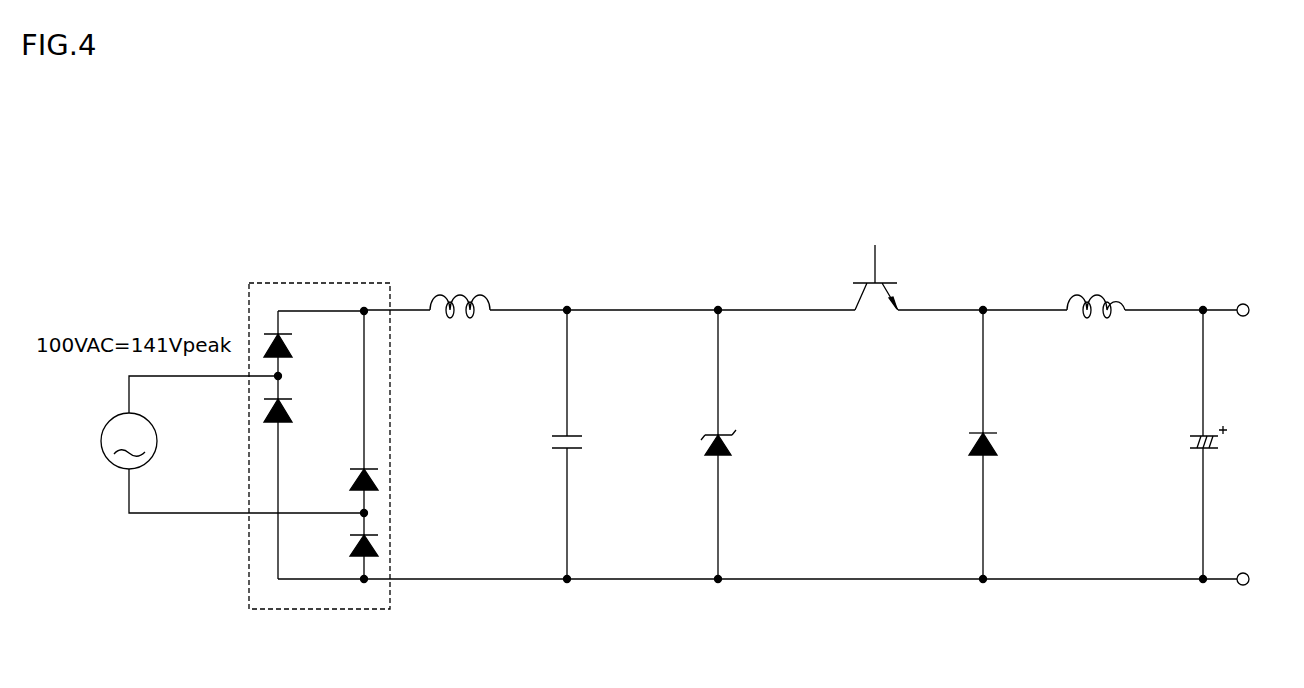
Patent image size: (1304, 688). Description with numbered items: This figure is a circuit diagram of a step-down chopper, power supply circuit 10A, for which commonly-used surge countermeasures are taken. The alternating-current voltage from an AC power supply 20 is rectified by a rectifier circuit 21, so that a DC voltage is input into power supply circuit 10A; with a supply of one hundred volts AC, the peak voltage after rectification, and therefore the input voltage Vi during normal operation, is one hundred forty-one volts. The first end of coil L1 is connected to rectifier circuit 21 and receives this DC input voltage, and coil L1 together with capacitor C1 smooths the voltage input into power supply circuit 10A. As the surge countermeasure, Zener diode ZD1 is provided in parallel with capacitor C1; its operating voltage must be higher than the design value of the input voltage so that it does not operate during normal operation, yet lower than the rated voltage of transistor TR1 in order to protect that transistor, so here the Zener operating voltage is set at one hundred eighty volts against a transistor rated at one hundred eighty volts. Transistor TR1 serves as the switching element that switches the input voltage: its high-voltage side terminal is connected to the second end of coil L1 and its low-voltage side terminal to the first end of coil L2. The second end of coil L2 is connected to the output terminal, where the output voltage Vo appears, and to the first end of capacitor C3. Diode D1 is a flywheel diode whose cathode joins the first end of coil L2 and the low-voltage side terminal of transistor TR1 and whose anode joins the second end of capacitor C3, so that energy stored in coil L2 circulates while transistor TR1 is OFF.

The power supply circuit 10A is at (1209, 232).
The AC power supply 20 is at (115, 414).
The rectifier circuit 21 is at (318, 283).
The coil L1 is at (463, 295).
The coil L2 is at (1096, 295).
The capacitor C1 is at (575, 435).
The capacitor C3 is at (1210, 448).
The Zener diode ZD1 is at (727, 430).
The diode D1 is at (988, 433).
The transistor TR1 is at (890, 283).
The input voltage Vi is at (564, 299).
The output voltage Vo is at (1268, 310).